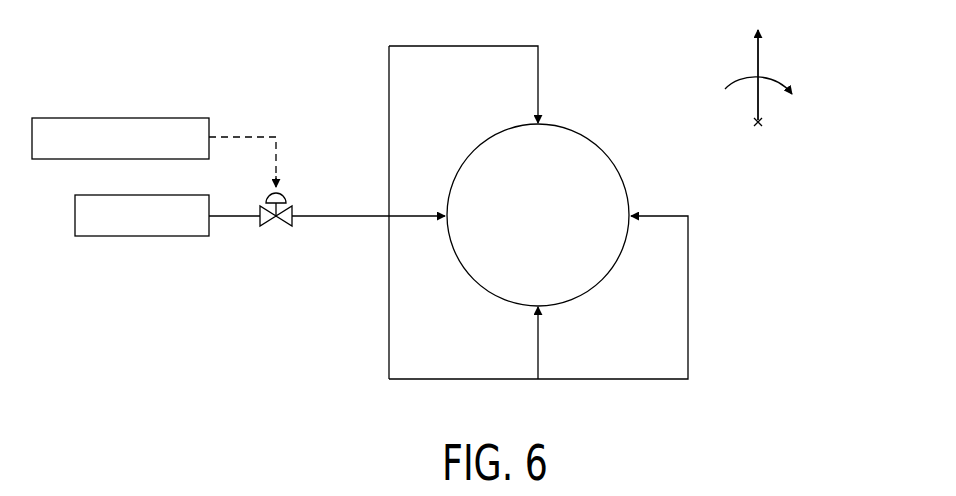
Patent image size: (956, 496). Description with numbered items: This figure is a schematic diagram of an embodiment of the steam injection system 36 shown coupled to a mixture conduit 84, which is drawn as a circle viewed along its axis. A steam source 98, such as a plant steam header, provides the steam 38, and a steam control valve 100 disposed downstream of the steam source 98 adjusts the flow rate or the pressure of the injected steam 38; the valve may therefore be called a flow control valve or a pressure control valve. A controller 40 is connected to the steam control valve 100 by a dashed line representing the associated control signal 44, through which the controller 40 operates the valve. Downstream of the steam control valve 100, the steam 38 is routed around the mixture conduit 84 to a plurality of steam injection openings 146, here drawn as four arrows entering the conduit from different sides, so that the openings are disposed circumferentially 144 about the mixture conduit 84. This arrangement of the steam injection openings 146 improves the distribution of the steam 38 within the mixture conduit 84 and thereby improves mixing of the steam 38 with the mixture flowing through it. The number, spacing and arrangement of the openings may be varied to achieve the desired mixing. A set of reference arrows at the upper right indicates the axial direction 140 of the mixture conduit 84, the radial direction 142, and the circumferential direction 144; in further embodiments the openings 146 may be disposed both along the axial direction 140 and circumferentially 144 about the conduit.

The steam injection system 36 is at (302, 100).
The controller 40 is at (116, 118).
The control signal 44 is at (276, 161).
The steam source 98 is at (139, 236).
The steam control valve 100 is at (283, 222).
The steam 38 is at (344, 217).
The mixture conduit 84 is at (603, 148).
The steam injection openings 146 is at (541, 125).
The axial direction 140 is at (758, 129).
The radial direction 142 is at (756, 52).
The circumferential direction 144 is at (782, 79).